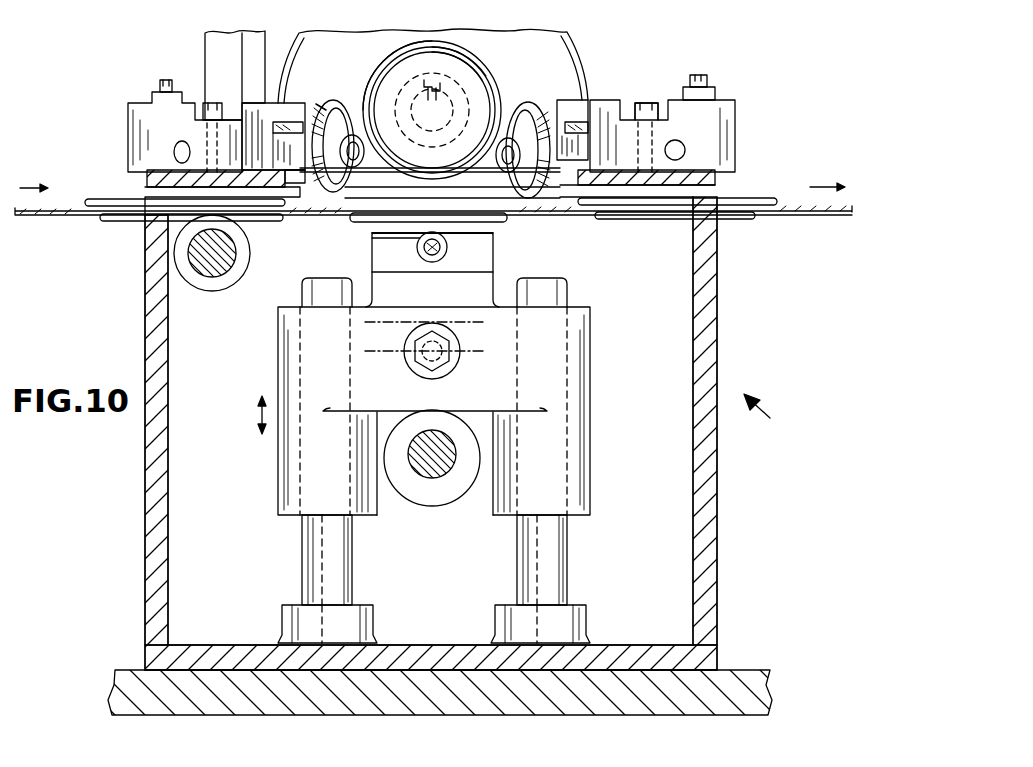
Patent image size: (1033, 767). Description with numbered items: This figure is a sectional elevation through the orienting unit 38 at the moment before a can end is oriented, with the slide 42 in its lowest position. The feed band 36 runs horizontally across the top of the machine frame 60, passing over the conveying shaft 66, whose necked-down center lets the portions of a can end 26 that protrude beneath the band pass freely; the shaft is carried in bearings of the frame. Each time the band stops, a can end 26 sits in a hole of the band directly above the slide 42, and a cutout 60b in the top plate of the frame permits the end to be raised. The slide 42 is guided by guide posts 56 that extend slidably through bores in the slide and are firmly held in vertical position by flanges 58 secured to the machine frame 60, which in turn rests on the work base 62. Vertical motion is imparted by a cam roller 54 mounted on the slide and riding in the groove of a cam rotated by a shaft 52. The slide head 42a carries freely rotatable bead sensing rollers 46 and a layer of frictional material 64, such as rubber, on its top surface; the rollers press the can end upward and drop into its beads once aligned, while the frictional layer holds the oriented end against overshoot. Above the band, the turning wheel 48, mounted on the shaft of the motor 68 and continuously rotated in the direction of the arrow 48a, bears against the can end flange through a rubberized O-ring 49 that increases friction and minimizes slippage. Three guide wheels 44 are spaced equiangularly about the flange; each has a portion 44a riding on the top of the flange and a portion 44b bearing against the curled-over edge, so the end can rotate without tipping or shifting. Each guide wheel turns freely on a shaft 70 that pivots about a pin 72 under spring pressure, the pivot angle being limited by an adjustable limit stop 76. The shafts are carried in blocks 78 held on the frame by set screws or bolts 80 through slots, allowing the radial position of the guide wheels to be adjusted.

The can end 26 is at (512, 230).
The feed band 36 is at (848, 216).
The orienting unit 38 is at (771, 432).
The slide 42 is at (292, 490).
The slide head 42a is at (493, 262).
The guide wheels 44 is at (545, 105).
The guide wheel portion 44a is at (510, 170).
The guide wheel portion 44b is at (332, 122).
The bead sensing rollers 46 is at (430, 262).
The turning wheel 48 is at (463, 80).
The direction of rotation 48a is at (399, 83).
The rubberized O-ring 49 is at (453, 62).
The shaft 52 is at (433, 476).
The cam roller 54 is at (412, 362).
The guide posts 56 is at (310, 564).
The flanges 58 is at (292, 621).
The machine frame 60 is at (215, 58).
The cutout 60b is at (306, 196).
The work base 62 is at (750, 678).
The frictional material 64 is at (378, 240).
The conveying shaft 66 is at (210, 292).
The motor 68 is at (566, 50).
The shaft 70 is at (573, 138).
The pin 72 is at (680, 150).
The adjustable limit stop 76 is at (708, 80).
The block 78 is at (140, 134).
The set screws or bolts 80 is at (648, 102).